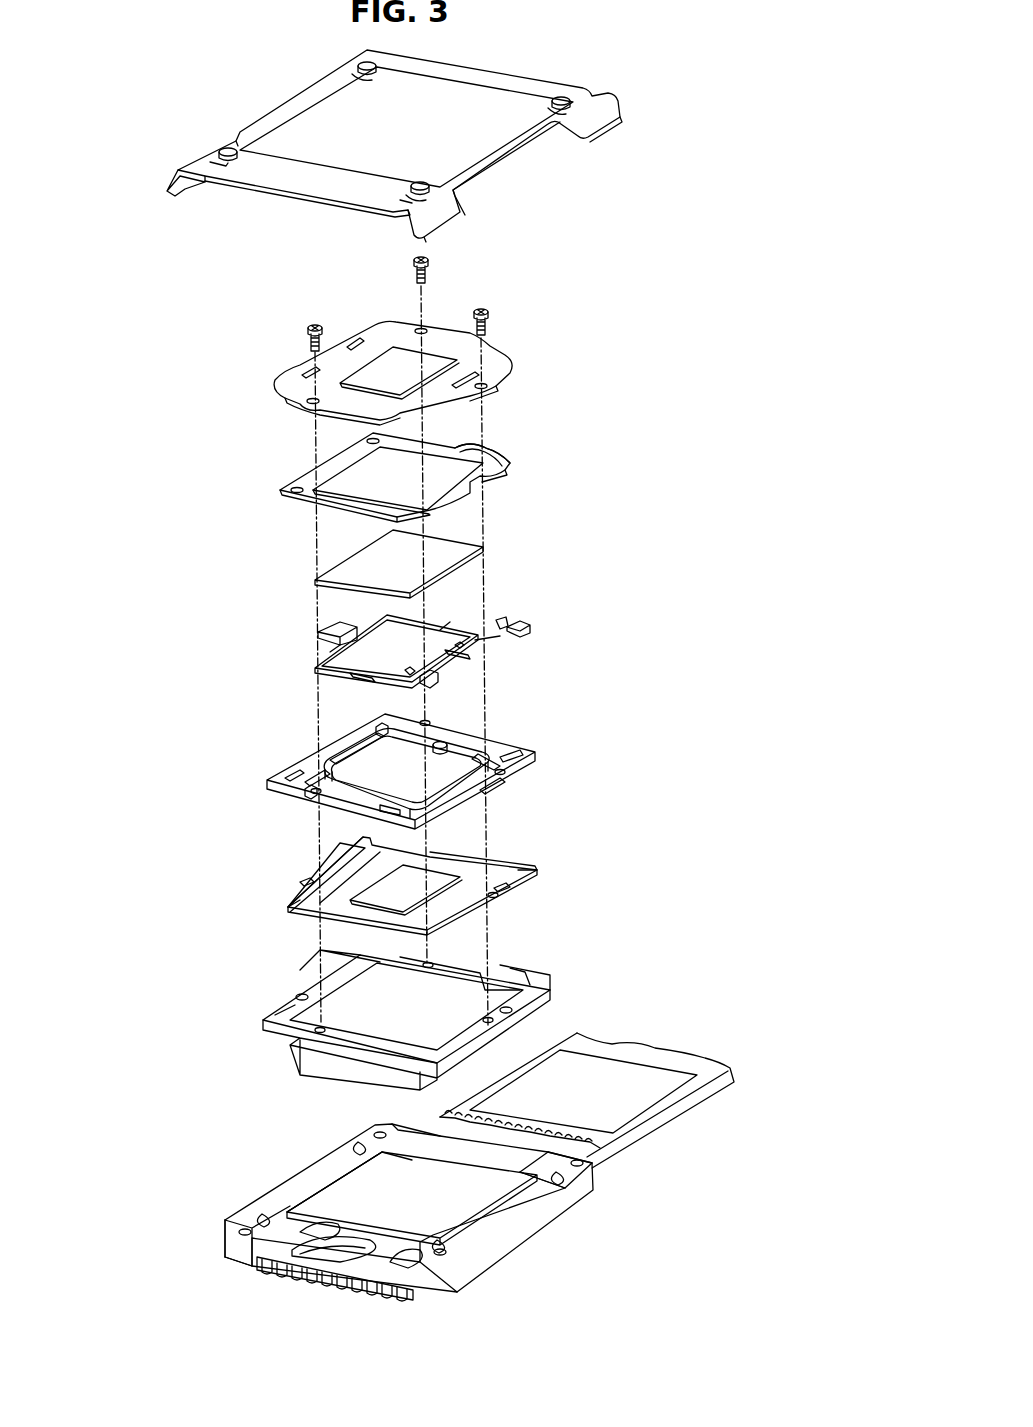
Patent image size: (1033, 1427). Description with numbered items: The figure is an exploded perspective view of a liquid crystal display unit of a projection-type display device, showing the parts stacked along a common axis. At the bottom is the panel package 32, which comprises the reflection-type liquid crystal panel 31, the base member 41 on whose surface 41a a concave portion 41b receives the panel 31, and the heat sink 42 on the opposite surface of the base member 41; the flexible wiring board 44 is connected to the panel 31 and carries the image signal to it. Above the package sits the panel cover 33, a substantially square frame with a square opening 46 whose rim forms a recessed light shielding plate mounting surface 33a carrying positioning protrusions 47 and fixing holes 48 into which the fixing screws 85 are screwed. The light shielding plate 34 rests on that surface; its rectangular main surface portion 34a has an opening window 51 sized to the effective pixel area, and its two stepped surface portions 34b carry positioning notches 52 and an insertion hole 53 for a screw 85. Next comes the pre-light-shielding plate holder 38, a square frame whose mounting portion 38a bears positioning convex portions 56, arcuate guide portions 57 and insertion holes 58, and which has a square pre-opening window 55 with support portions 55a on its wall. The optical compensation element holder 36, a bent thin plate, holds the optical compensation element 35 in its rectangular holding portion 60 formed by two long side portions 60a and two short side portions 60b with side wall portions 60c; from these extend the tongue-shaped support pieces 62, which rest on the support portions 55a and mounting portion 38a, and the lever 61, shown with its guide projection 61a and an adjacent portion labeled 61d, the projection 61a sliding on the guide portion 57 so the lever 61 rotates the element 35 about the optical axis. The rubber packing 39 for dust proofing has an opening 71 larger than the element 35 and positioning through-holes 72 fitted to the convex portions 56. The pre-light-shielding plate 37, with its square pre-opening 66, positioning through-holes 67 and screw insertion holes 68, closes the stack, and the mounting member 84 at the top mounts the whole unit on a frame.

The mounting member 84 is at (612, 103).
The fixing screws 85 is at (428, 262).
The pre-light-shielding plate 37 is at (412, 356).
The pre-opening 66 is at (372, 378).
The through-holes 67 is at (373, 334).
The insertion holes 68 is at (421, 331).
The packing 39 is at (404, 464).
The opening 71 is at (480, 455).
The through-holes 72 is at (368, 441).
The optical compensation element 35 is at (470, 553).
The optical compensation element holder 36 is at (420, 631).
The holding portion 60 is at (387, 622).
The long side portions 60a is at (335, 648).
The short side portions 60b is at (450, 627).
The side wall portions 60c is at (350, 674).
The lever 61 is at (438, 680).
The guide projection 61a is at (506, 620).
The contact portion 61d is at (500, 638).
The support pieces 62 is at (335, 630).
The pre-light-shielding plate holder 38 is at (420, 770).
The mounting portion 38a is at (290, 778).
The pre-opening window 55 is at (333, 758).
The support portions 55a is at (310, 782).
The convex portions 56 is at (382, 727).
The guide portions 57 is at (515, 755).
The insertion holes 58 is at (425, 722).
The light shielding plate 34 is at (411, 880).
The main surface portion 34a is at (298, 906).
The stepped surface portions 34b is at (290, 900).
The opening window 51 is at (375, 905).
The notches 52 is at (302, 880).
The insertion hole 53 is at (493, 897).
The panel cover 33 is at (415, 1014).
The light shielding plate mounting surface 33a is at (285, 1012).
The opening 46 is at (520, 975).
The protrusions 47 is at (302, 995).
The fixing holes 48 is at (320, 1032).
The flexible wiring board 44 is at (646, 1115).
The base member 41 is at (440, 1208).
The surface 41a is at (585, 1175).
The concave portion 41b is at (345, 1177).
The liquid crystal panel 31 is at (465, 1200).
The heat sink 42 is at (330, 1290).
The panel package 32 is at (222, 1232).